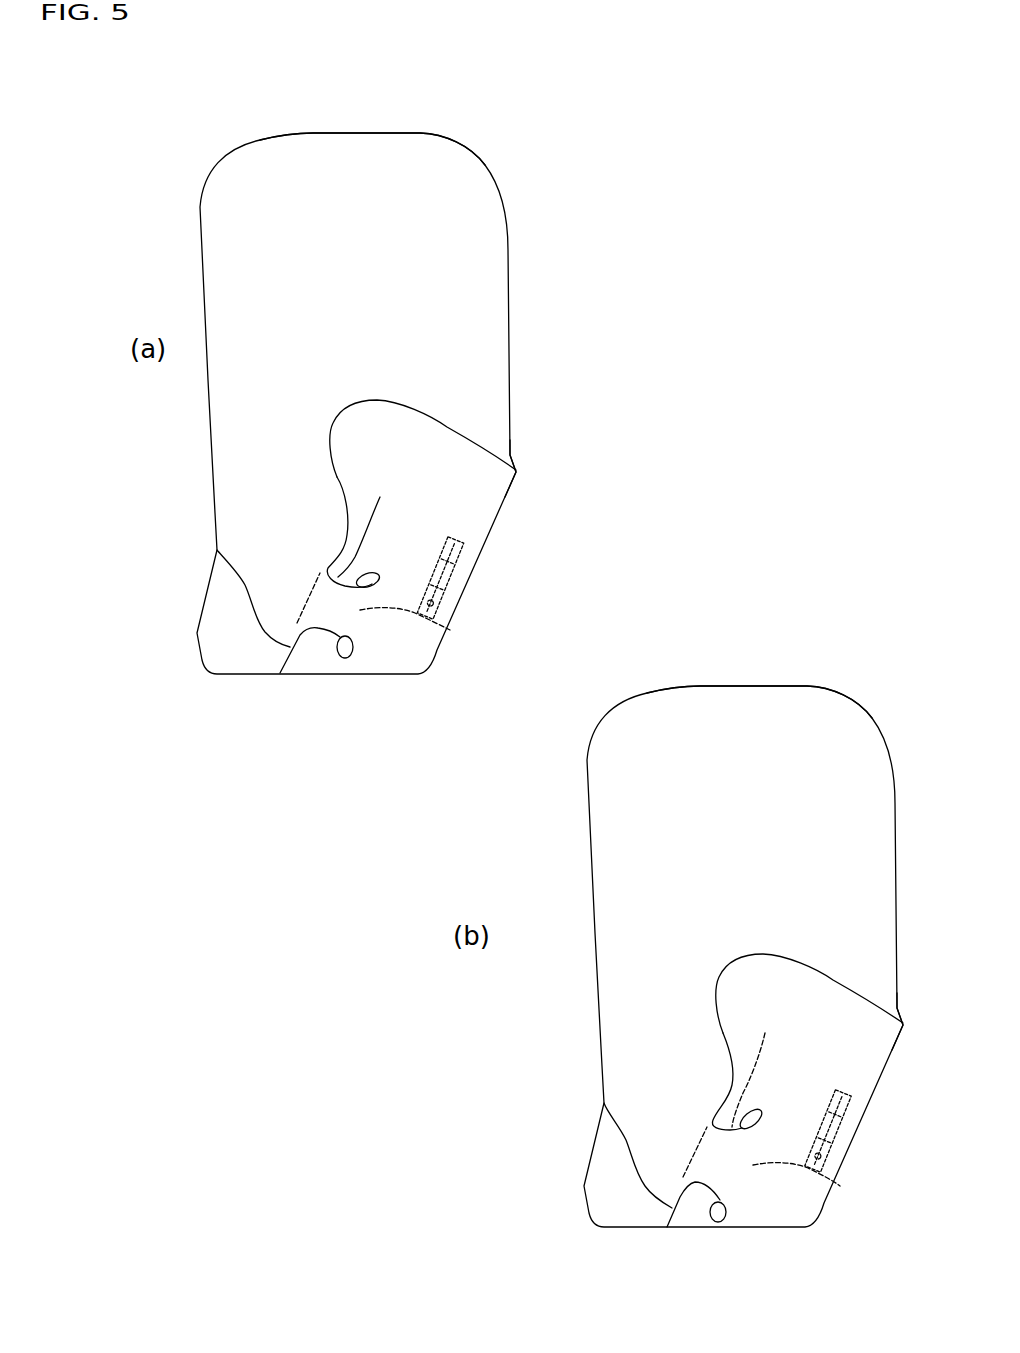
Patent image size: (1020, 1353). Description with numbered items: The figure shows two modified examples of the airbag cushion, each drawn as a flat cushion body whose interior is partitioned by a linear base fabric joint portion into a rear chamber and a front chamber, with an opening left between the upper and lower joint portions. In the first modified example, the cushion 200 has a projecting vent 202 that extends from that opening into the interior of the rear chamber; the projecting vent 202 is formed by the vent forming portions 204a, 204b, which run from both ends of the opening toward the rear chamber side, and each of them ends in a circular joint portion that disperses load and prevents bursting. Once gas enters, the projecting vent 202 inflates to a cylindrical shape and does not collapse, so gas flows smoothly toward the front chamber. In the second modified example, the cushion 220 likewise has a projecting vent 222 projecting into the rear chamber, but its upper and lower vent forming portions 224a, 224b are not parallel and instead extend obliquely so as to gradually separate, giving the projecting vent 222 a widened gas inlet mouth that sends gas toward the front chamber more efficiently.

The cushion 200 is at (202, 138).
The cushion 220 is at (590, 694).
The vent forming portion 204a is at (380, 497).
The upper vent forming portion 224a is at (753, 1072).
The projecting vent 202 is at (450, 630).
The projecting vent 222 is at (840, 1186).
The vent forming portion 204b is at (320, 633).
The lower vent forming portion 224b is at (703, 1190).